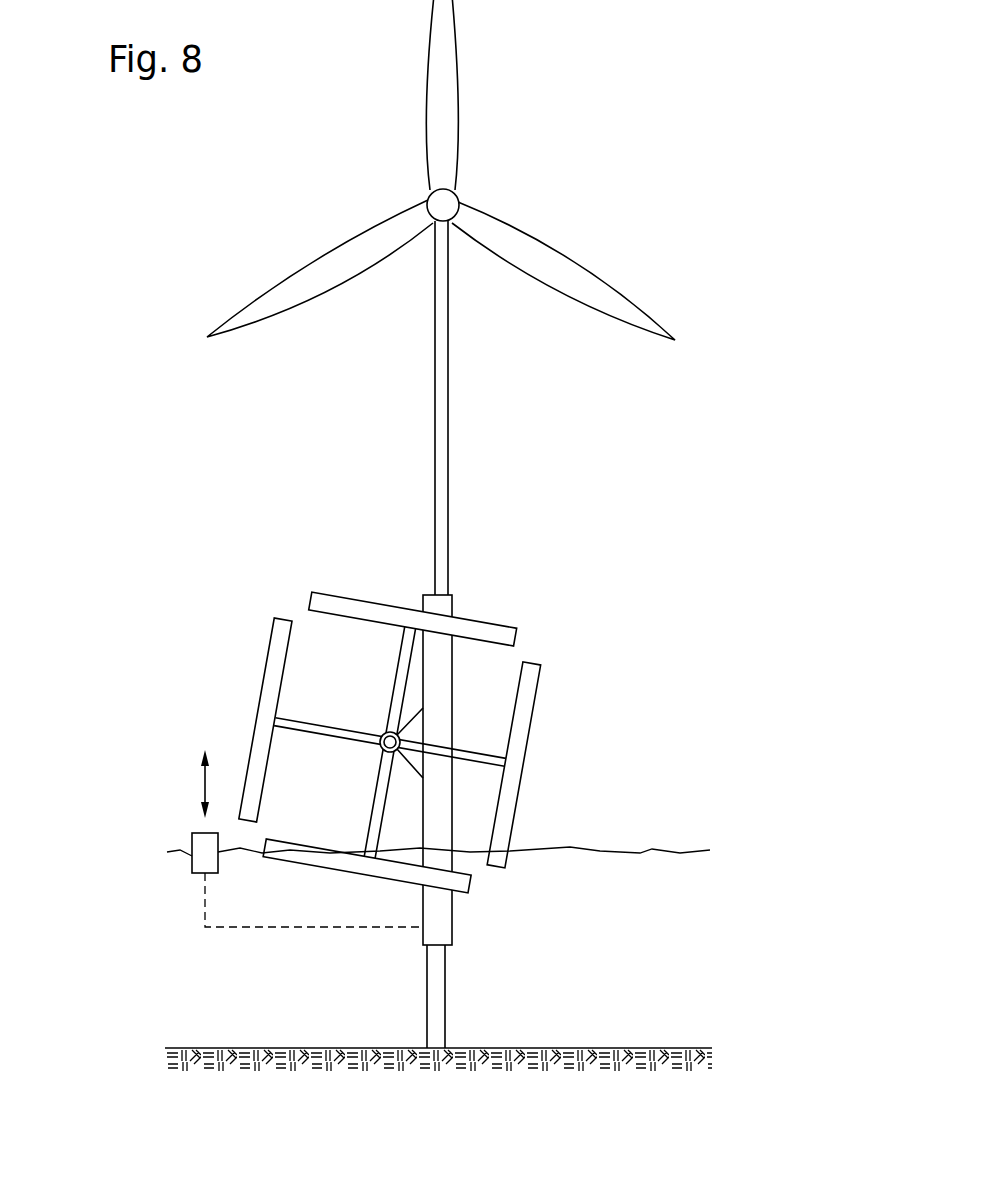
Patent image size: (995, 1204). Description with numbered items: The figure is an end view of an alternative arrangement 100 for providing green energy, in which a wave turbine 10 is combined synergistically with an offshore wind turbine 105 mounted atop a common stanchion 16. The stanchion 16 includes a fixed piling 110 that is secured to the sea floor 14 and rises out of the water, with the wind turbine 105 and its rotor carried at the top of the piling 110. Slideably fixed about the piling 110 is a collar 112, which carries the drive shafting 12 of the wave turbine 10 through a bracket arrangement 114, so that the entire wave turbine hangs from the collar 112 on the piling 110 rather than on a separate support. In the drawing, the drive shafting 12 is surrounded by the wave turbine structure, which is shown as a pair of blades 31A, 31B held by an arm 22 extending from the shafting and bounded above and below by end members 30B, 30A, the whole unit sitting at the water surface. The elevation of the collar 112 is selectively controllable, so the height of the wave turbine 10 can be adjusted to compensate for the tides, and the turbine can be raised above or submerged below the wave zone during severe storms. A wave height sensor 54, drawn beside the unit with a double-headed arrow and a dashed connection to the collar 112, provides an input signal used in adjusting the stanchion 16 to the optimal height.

The alternative arrangement 100 is at (131, 226).
The offshore wind turbine 105 is at (457, 193).
The fixed piling 110 is at (448, 472).
The wave turbine 10 is at (537, 702).
The drive shafting 12 is at (380, 750).
The support arm 22 is at (390, 742).
The bracket arrangement 114 is at (415, 713).
The lower support plate 30A is at (367, 866).
The upper support plate 30B is at (413, 619).
The turbine blade 31A is at (513, 765).
The turbine blade 31B is at (265, 720).
The wave height sensor 54 is at (192, 863).
The collar 112 is at (423, 935).
The stanchion 16 is at (445, 1004).
The sea floor 14 is at (642, 1047).